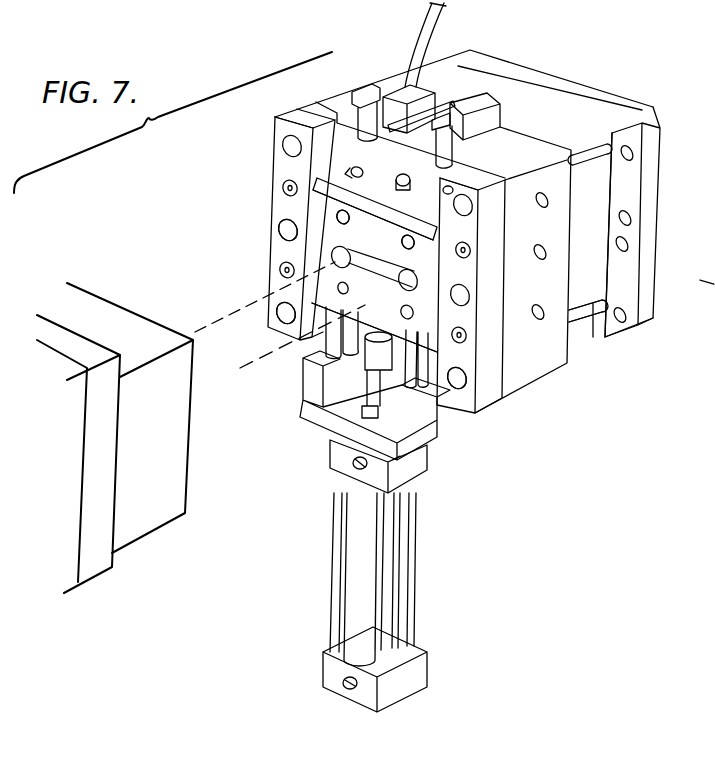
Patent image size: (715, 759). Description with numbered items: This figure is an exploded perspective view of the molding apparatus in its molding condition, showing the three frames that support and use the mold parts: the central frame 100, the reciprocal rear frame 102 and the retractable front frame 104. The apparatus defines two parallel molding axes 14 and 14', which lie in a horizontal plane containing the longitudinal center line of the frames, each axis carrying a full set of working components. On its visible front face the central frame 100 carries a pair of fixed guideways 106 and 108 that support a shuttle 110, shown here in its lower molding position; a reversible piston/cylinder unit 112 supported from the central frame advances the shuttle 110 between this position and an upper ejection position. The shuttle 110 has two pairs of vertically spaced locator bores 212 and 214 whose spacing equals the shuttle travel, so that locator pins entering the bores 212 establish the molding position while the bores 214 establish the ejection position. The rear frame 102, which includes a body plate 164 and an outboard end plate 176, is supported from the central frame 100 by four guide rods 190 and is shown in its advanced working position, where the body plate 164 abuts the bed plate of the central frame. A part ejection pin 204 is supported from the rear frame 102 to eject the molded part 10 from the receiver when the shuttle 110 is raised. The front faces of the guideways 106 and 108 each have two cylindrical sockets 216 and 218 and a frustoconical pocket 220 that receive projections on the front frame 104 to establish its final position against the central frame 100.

The part 10 is at (707, 271).
The molding axis 14 is at (302, 349).
The molding axis 14' is at (265, 308).
The central frame 100 is at (517, 397).
The rear frame 102 is at (633, 336).
The front frame 104 is at (170, 533).
The guideway 106 is at (272, 202).
The guideway 108 is at (497, 292).
The shuttle 110 is at (378, 243).
The reversible piston/cylinder unit 112 is at (413, 540).
The body plate 164 is at (578, 333).
The outboard end plate 176 is at (655, 133).
The guide rods 190 is at (605, 170).
The part ejection pin 204 is at (440, 182).
The locator bores 212 is at (408, 235).
The locator bores 214 is at (398, 277).
The cylindrical socket 216 is at (275, 138).
The cylindrical socket 218 is at (276, 309).
The frustoconical pocket 220 is at (276, 232).